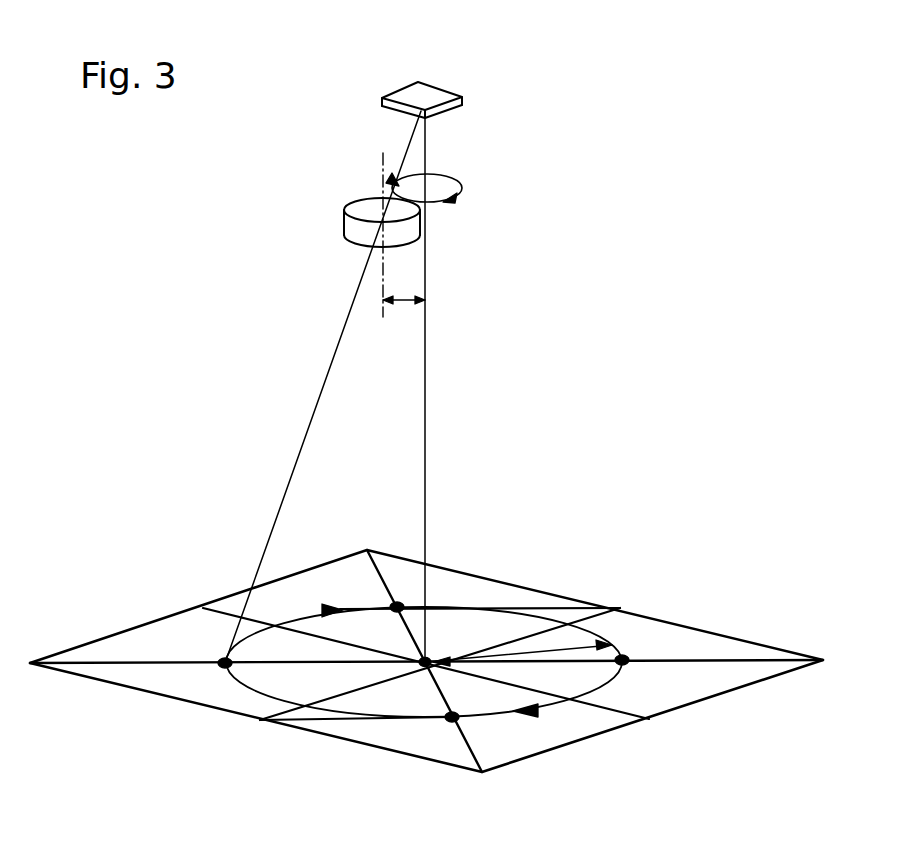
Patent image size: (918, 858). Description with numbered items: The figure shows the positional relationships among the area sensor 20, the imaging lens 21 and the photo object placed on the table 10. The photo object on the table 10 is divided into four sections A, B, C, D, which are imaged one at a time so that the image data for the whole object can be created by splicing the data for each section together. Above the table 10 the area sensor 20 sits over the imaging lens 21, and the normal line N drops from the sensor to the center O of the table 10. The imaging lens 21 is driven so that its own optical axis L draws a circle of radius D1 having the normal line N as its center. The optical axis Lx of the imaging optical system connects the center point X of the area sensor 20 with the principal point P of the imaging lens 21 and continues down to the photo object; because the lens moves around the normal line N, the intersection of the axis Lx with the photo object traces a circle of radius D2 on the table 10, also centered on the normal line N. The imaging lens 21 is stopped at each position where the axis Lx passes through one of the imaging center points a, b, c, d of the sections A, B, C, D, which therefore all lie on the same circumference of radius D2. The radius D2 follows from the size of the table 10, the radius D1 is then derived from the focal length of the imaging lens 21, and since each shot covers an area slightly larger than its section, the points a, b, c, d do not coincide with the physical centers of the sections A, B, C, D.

The table 10 is at (683, 623).
The area sensor 20 is at (450, 92).
The imaging lens 21 is at (342, 218).
The normal line N is at (425, 410).
The optical axis of the imaging lens L is at (383, 165).
The optical axis of the imaging optical system Lx is at (323, 393).
The center point of the area sensor X is at (425, 128).
The principal point of the imaging lens P is at (372, 242).
The radius of the circle drawn by the lens optical axis D1 is at (405, 300).
The radius of the circle of imaging points D2 is at (518, 645).
The center of the table O is at (425, 664).
The imaging center point of section A a is at (225, 668).
The imaging center point of section B b is at (397, 607).
The imaging center point of section C c is at (622, 665).
The imaging center point of section D d is at (452, 720).
The section A is at (190, 707).
The section B is at (473, 573).
The section C is at (623, 620).
The section D is at (352, 745).